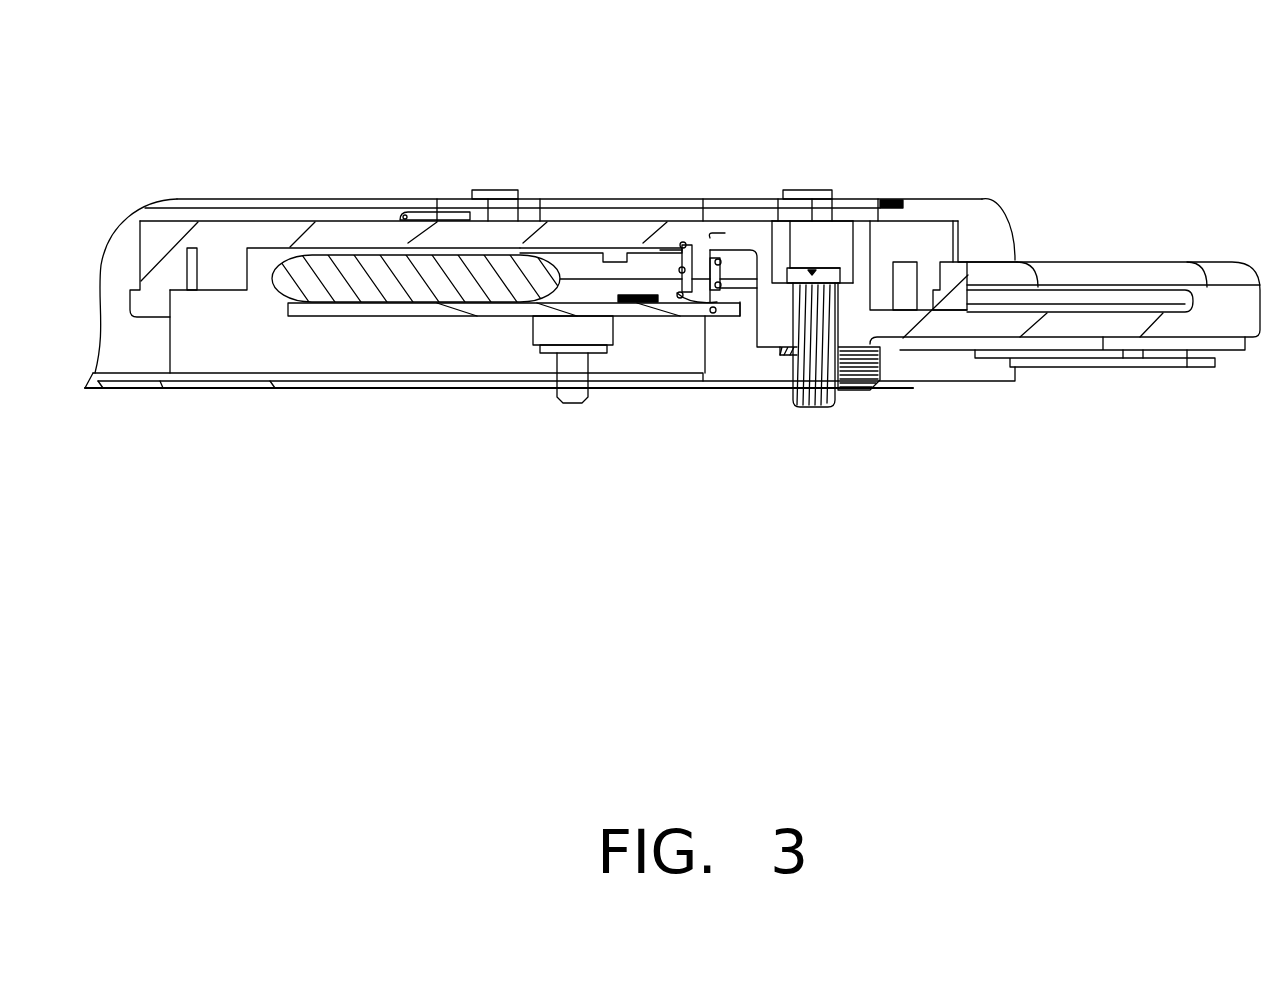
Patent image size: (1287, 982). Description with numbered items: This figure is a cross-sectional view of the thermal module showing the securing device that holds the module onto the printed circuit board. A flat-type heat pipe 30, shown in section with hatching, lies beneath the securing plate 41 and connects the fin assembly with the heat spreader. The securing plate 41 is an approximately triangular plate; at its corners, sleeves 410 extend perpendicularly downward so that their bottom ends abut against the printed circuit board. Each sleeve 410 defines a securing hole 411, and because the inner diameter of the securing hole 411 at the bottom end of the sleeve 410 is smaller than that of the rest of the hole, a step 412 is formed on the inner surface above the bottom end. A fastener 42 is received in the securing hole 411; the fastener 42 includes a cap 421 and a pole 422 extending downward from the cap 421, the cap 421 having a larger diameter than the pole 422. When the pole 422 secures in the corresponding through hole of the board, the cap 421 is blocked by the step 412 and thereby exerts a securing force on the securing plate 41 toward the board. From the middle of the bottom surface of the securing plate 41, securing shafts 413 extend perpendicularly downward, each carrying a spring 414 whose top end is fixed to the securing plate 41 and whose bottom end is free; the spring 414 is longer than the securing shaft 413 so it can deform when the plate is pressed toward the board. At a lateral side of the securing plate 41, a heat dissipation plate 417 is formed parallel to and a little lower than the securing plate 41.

The flat-type heat pipe 30 is at (378, 270).
The securing plate 41 is at (227, 258).
The fastener 42 is at (570, 385).
The sleeve 410 is at (772, 323).
The securing hole 411 is at (837, 243).
The step 412 is at (779, 284).
The securing shaft 413 is at (697, 255).
The spring 414 is at (685, 247).
The heat dissipation plate 417 is at (1075, 323).
The cap 421 is at (836, 272).
The pole 422 is at (812, 338).